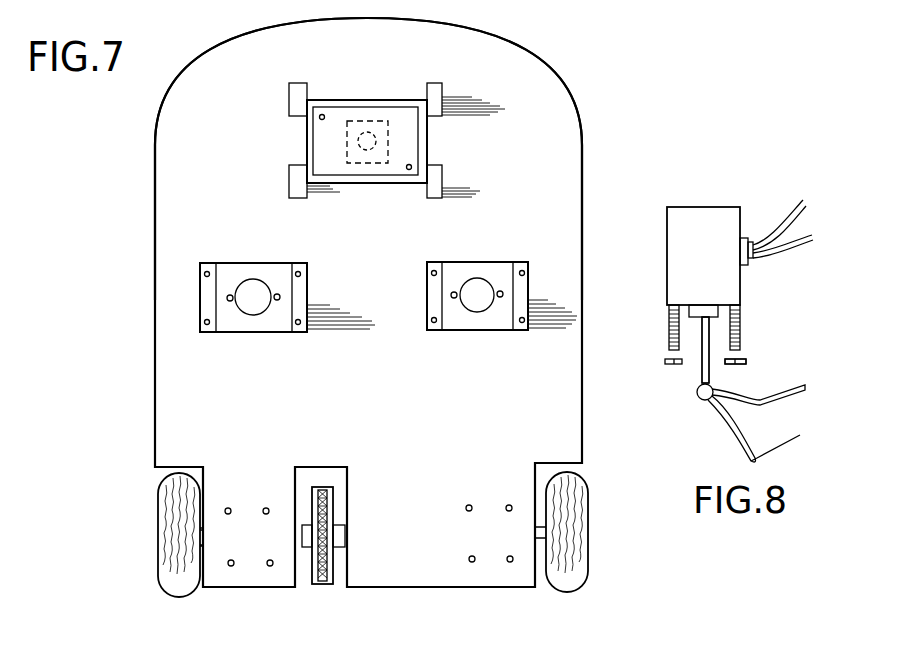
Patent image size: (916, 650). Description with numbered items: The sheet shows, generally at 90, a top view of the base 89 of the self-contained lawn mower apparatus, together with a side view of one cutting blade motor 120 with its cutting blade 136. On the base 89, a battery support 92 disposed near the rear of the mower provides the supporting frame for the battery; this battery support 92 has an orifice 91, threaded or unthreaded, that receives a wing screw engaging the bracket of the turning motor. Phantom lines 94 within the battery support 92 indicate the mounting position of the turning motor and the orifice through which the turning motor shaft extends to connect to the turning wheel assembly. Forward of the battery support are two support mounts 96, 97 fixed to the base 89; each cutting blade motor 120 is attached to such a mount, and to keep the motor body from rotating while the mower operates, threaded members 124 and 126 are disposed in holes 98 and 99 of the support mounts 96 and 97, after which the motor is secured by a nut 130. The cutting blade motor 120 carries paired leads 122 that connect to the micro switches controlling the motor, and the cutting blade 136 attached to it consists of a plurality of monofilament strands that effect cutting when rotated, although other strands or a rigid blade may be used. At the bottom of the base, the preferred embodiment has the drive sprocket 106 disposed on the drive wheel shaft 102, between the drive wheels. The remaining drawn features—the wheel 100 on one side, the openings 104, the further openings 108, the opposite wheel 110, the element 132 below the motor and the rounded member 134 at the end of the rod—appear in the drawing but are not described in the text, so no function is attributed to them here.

In FIG. 7, the base 89 is at (155, 172).
In FIG. 7, the top view of the base 90 is at (268, 20).
In FIG. 7, the orifice 91 is at (324, 115).
In FIG. 7, the battery support 92 is at (390, 100).
In FIG. 7, the phantom lines 94 is at (347, 138).
In FIG. 7, the support mount 96 is at (200, 288).
In FIG. 7, the support mount 97 is at (528, 291).
In FIG. 7, the holes 98 is at (277, 294).
In FIG. 7, the holes 99 is at (500, 291).
In FIG. 7, the left drive wheel 100 is at (158, 530).
In FIG. 7, the drive wheel shaft 102 is at (201, 528).
In FIG. 7, the mounting holes 104 is at (230, 514).
In FIG. 7, the drive sprocket 106 is at (327, 512).
In FIG. 7, the mounting holes 108 is at (472, 556).
In FIG. 7, the right drive wheel 110 is at (588, 527).
In FIG. 8, the cutting blade motor 120 is at (666, 221).
In FIG. 8, the paired leads 122 is at (640, 372).
In FIG. 8, the threaded member 124 is at (669, 330).
In FIG. 8, the threaded member 126 is at (740, 318).
In FIG. 8, the nut 130 is at (746, 361).
In FIG. 8, the plunger rod 132 is at (700, 366).
In FIG. 8, the ball joint 134 is at (708, 401).
In FIG. 8, the cutting blade 136 is at (787, 400).